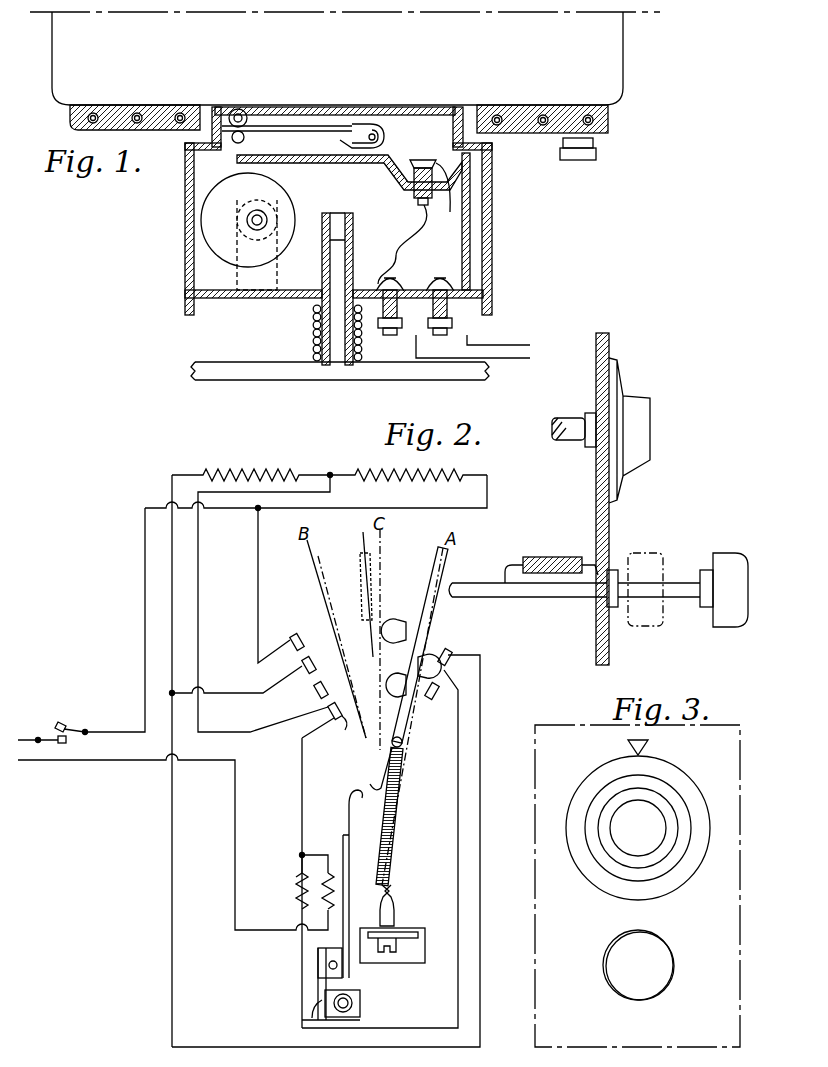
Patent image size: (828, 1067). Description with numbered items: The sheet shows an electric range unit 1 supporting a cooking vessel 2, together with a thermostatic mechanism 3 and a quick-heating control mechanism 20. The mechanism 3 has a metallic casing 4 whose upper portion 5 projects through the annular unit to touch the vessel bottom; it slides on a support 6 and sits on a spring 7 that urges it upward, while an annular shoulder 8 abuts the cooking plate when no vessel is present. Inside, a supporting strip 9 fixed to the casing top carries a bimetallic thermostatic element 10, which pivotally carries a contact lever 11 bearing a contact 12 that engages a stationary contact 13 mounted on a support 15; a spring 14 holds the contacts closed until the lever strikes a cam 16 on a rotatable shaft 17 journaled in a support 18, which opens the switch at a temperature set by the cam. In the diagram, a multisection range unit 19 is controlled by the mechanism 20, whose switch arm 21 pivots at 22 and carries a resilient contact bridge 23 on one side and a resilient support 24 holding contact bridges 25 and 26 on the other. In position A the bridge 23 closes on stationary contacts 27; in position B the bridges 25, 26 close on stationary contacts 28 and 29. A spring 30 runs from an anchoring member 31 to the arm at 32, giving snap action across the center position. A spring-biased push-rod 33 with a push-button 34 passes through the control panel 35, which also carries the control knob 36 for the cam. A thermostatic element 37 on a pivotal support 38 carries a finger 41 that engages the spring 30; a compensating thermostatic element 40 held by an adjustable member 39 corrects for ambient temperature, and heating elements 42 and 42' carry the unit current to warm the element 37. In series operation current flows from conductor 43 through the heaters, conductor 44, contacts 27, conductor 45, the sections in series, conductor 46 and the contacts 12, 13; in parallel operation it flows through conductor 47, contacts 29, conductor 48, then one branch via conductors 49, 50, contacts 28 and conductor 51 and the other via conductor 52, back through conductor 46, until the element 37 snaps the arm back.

In FIG. 1, the electric range unit 1 is at (608, 130).
In FIG. 1, the cooking vessel 2 is at (625, 62).
In FIG. 1, the thermostatic mechanism 3 is at (398, 229).
In FIG. 1, the metallic casing 4 is at (492, 232).
In FIG. 1, the upper portion of casing 5 is at (441, 107).
In FIG. 1, the support 6 is at (337, 263).
In FIG. 1, the spring 7 is at (316, 330).
In FIG. 1, the annular shoulder 8 is at (492, 152).
In FIG. 1, the supporting strip 9 is at (290, 107).
In FIG. 1, the thermostatic element 10 is at (326, 127).
In FIG. 1, the contact lever 11 is at (337, 162).
In FIG. 1, the contact 12 is at (449, 196).
In FIG. 2, the contact 12 is at (68, 740).
In FIG. 1, the stationary contact 13 is at (421, 160).
In FIG. 2, the stationary contact 13 is at (64, 727).
In FIG. 1, the spring 14 is at (352, 135).
In FIG. 1, the support 15 is at (462, 256).
In FIG. 1, the cam 16 is at (215, 193).
In FIG. 1, the rotatable shaft 17 is at (250, 228).
In FIG. 2, the rotatable shaft 17 is at (565, 427).
In FIG. 1, the support 18 is at (273, 262).
In FIG. 2, the multisection range unit 19 is at (342, 468).
In FIG. 2, the control mechanism 20 is at (432, 866).
In FIG. 2, the switch arm 21 is at (408, 722).
In FIG. 2, the pivot 22 is at (378, 782).
In FIG. 2, the resilient contact bridge 23 is at (455, 650).
In FIG. 2, the resilient support 24 is at (405, 643).
In FIG. 2, the resilient contact bridge 25 is at (395, 620).
In FIG. 2, the resilient contact bridge 26 is at (386, 690).
In FIG. 2, the stationary contacts 27 is at (432, 698).
In FIG. 2, the stationary contacts 28 is at (316, 655).
In FIG. 2, the stationary contacts 29 is at (334, 715).
In FIG. 2, the spring 30 is at (395, 812).
In FIG. 2, the stationary anchoring member 31 is at (393, 915).
In FIG. 2, the spring attachment point 32 is at (404, 748).
In FIG. 2, the push-rod 33 is at (548, 588).
In FIG. 2, the push-button 34 is at (733, 565).
In FIG. 3, the push-button 34 is at (655, 980).
In FIG. 2, the control panel 35 is at (604, 515).
In FIG. 3, the control panel 35 is at (722, 803).
In FIG. 2, the control knob 36 is at (615, 385).
In FIG. 3, the control knob 36 is at (695, 868).
In FIG. 2, the thermostatic element 37 is at (348, 870).
In FIG. 2, the pivotal support 38 is at (318, 958).
In FIG. 2, the adjustable member 39 is at (362, 1005).
In FIG. 2, the compensating thermostatic element 40 is at (323, 985).
In FIG. 2, the finger 41 is at (345, 803).
In FIG. 2, the heating element 42 is at (300, 881).
In FIG. 2, the heating element 42' is at (283, 859).
In FIG. 2, the conductor 43 is at (100, 763).
In FIG. 2, the conductor 44 is at (460, 858).
In FIG. 2, the conductor 45 is at (479, 878).
In FIG. 2, the conductor 46 is at (145, 566).
In FIG. 2, the conductor 47 is at (302, 784).
In FIG. 2, the conductor 48 is at (198, 668).
In FIG. 2, the conductor 49 is at (145, 612).
In FIG. 2, the conductor 50 is at (265, 692).
In FIG. 2, the conductor 51 is at (258, 615).
In FIG. 2, the conductor 52 is at (395, 508).